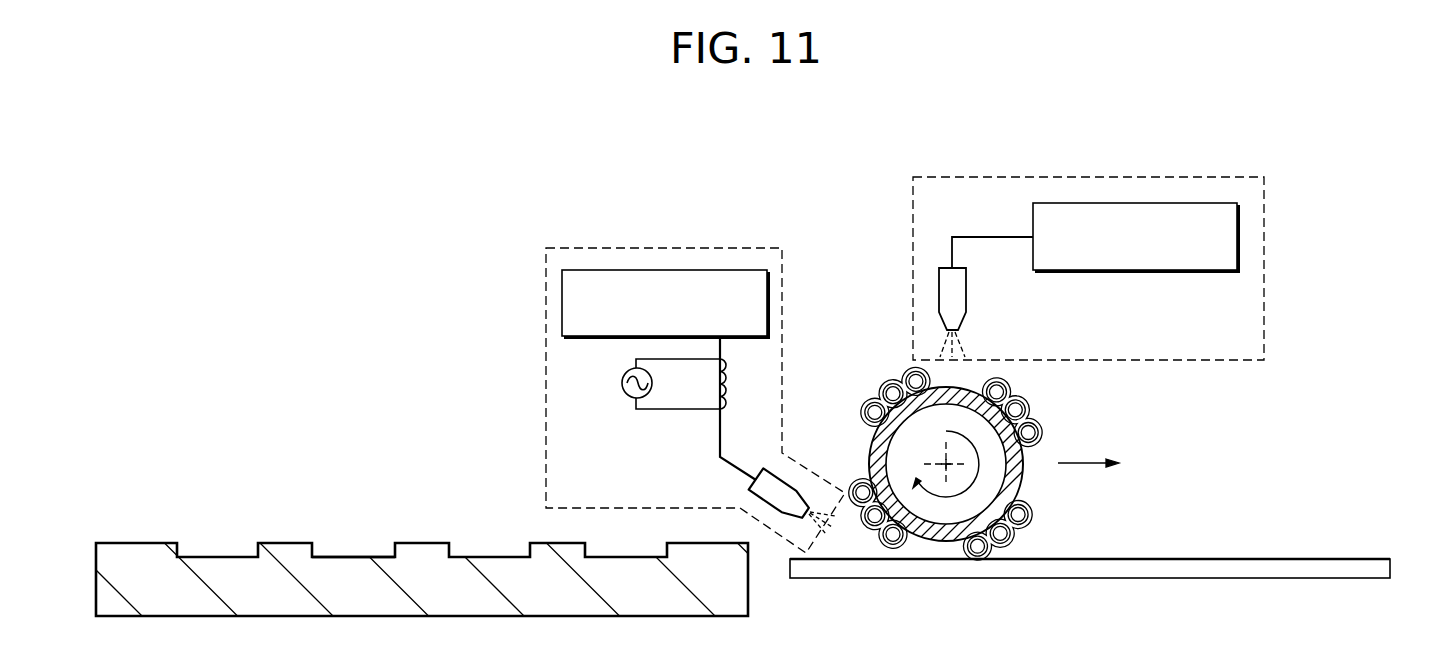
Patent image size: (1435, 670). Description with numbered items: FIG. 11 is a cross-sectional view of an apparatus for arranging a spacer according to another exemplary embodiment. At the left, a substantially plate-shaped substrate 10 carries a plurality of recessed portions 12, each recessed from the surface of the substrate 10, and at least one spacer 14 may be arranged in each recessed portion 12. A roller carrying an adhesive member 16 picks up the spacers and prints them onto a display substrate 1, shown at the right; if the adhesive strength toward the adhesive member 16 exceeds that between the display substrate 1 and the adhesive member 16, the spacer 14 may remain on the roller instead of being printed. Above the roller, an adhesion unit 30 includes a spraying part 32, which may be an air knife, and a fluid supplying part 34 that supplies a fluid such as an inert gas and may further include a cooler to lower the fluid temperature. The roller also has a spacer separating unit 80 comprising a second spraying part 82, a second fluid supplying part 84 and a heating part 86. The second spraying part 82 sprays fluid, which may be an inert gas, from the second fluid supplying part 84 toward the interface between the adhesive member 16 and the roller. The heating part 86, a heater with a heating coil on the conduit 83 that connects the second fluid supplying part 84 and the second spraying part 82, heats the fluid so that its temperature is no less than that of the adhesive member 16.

The display substrate 1 is at (1374, 568).
The substrate 10 is at (417, 557).
The recessed portion 12 is at (372, 550).
The spacer 14 is at (1022, 511).
The adhesive member 16 is at (1016, 546).
The adhesion unit 30 is at (1264, 278).
The spraying part 32 is at (938, 290).
The fluid supplying part 34 is at (1237, 222).
The spacer separating unit 80 is at (660, 247).
The second spraying part 82 is at (783, 478).
The conduit 83 is at (735, 458).
The second fluid supplying part 84 is at (705, 270).
The heating part 86 is at (675, 410).